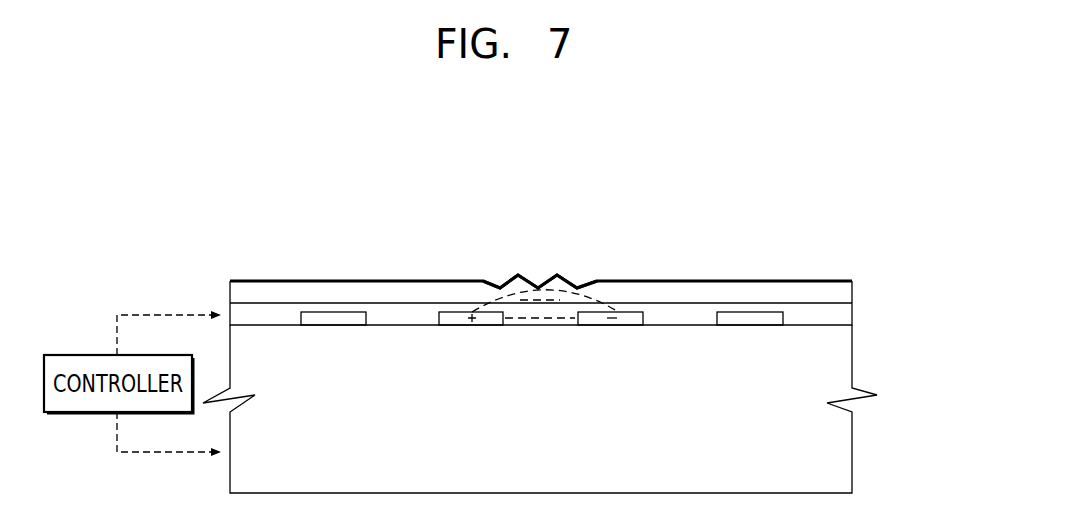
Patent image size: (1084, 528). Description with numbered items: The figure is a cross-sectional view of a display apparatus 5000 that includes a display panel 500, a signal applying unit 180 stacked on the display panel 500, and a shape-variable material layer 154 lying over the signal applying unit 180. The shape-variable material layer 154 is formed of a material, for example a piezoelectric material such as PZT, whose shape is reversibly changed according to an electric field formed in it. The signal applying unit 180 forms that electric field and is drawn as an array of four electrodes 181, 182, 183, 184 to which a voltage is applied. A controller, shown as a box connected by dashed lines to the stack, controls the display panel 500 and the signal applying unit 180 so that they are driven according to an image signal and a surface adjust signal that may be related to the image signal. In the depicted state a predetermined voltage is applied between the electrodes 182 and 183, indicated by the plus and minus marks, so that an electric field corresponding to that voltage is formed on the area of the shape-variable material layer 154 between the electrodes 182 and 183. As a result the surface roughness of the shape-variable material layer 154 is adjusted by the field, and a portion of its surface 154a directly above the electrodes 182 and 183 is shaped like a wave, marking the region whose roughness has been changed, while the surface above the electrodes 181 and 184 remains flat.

The display apparatus 5000 is at (850, 245).
The shape-variable material layer 154 is at (575, 260).
The surface of the shape-variable material layer 154a is at (681, 279).
The signal applying unit 180 is at (594, 339).
The electrode 181 is at (333, 327).
The electrode 182 is at (455, 327).
The electrode 183 is at (627, 327).
The electrode 184 is at (751, 327).
The display panel 500 is at (836, 450).